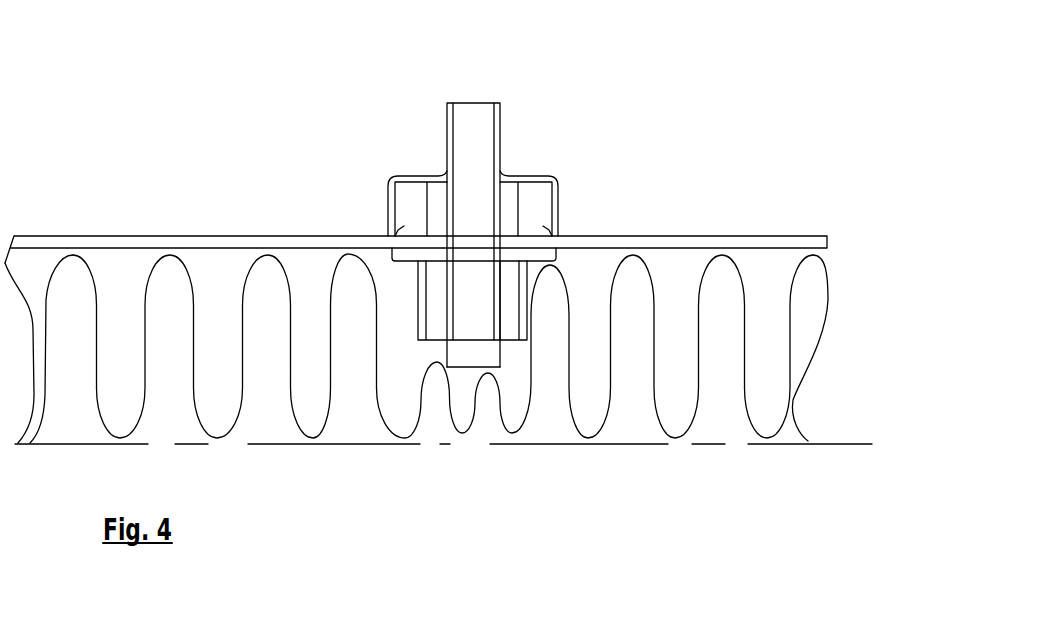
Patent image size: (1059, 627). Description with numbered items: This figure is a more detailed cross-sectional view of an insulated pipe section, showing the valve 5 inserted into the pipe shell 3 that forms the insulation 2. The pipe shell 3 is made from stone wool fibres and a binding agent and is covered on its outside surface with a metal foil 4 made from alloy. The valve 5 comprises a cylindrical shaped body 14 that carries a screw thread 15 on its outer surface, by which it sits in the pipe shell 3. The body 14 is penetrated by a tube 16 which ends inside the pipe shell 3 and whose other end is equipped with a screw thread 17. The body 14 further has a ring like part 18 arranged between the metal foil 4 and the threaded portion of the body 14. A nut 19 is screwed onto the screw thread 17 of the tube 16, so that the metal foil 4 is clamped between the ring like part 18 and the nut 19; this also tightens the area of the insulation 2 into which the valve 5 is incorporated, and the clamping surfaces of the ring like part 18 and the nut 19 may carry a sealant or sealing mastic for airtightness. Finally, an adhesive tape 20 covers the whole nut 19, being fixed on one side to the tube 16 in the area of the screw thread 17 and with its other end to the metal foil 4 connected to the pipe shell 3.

The insulation 2 is at (857, 234).
The pipe shell 3 is at (810, 292).
The metal foil 4 is at (722, 242).
The valve 5 is at (597, 102).
The cylindrical shaped body 14 is at (508, 300).
The screw thread 15 is at (422, 302).
The tube 16 is at (473, 352).
The screw thread 17 is at (498, 123).
The ring like part 18 is at (400, 255).
The nut 19 is at (532, 210).
The adhesive tape 20 is at (560, 228).